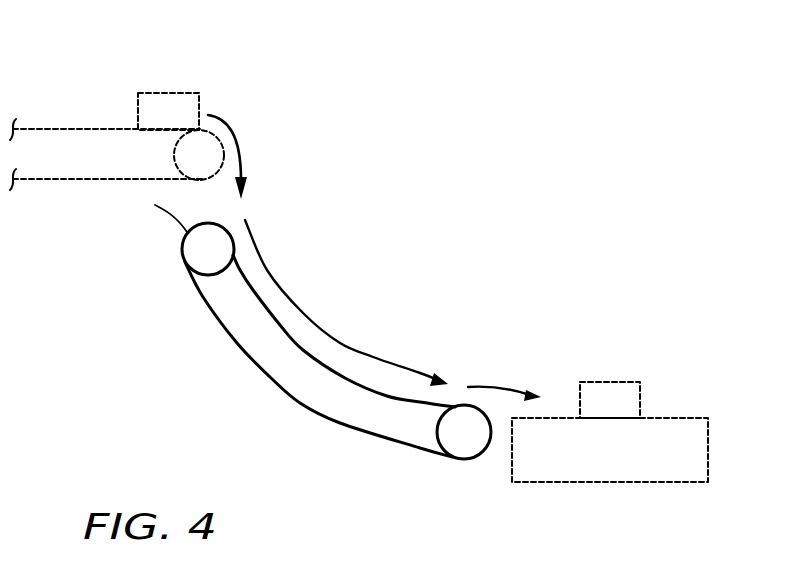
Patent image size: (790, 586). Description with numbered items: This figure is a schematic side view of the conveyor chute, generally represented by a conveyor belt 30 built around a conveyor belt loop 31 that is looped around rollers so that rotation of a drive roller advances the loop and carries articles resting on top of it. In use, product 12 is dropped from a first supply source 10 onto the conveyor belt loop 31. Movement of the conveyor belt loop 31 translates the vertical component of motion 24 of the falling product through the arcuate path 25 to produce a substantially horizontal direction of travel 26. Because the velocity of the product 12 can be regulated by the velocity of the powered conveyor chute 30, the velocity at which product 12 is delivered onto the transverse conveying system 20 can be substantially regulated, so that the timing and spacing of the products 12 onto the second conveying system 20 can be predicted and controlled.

The first supply source 10 is at (80, 202).
The product 12 is at (173, 92).
The transverse conveying system 20 is at (568, 488).
The vertical component of motion 24 is at (240, 142).
The arcuate path 25 is at (253, 240).
The substantially horizontal direction of travel 26 is at (485, 392).
The conveyor belt 30 is at (293, 332).
The conveyor belt loop 31 is at (290, 333).